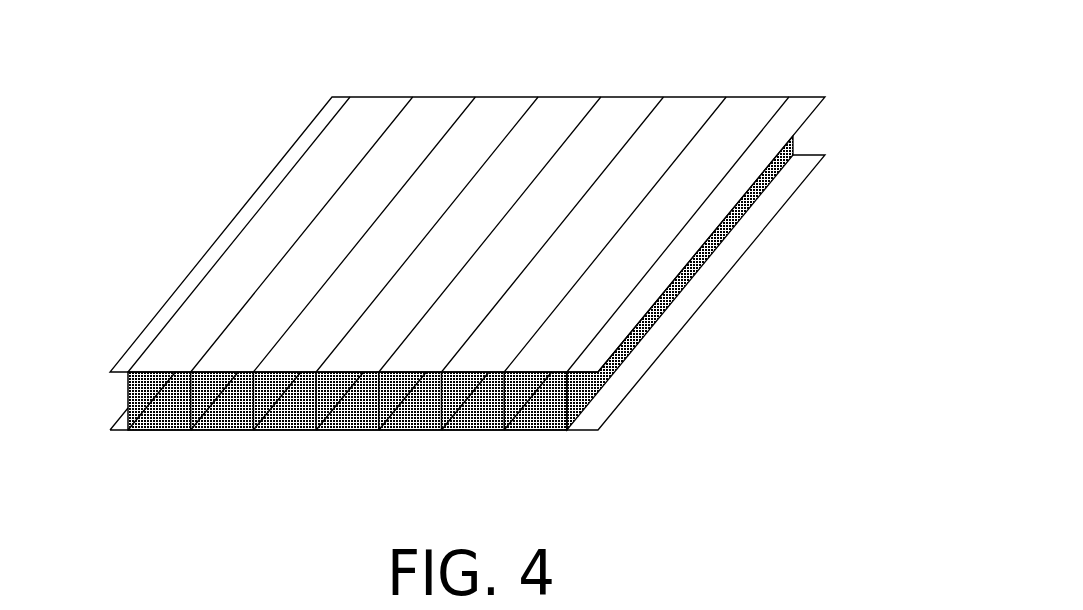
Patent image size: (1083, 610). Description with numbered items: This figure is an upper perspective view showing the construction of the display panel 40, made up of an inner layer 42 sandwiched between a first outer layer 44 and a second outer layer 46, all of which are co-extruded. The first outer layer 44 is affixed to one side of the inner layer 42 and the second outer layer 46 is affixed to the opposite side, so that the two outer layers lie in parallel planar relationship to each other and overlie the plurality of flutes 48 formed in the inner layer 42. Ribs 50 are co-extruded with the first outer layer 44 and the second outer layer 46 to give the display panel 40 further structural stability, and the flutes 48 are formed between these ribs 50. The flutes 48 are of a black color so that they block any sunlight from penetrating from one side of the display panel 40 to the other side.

The display panel 40 is at (469, 256).
The inner layer 42 is at (793, 140).
The first outer layer 44 is at (503, 103).
The second outer layer 46 is at (523, 431).
The flutes 48 is at (287, 423).
The ribs 50 is at (128, 390).